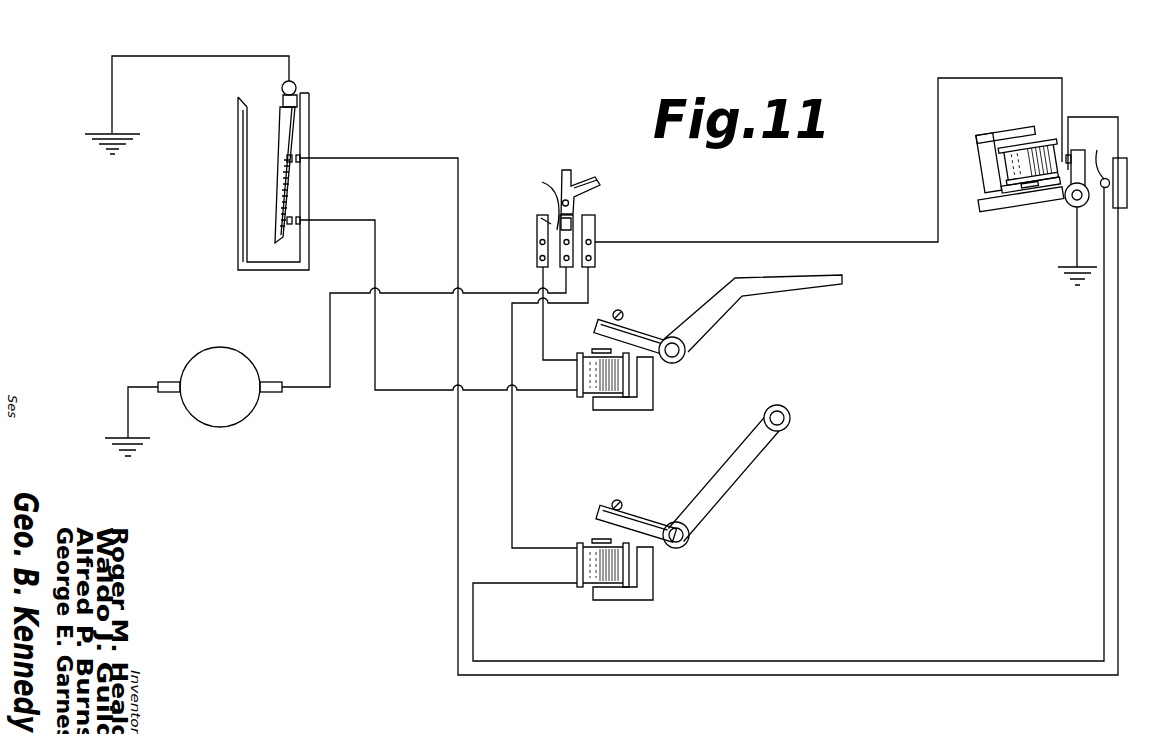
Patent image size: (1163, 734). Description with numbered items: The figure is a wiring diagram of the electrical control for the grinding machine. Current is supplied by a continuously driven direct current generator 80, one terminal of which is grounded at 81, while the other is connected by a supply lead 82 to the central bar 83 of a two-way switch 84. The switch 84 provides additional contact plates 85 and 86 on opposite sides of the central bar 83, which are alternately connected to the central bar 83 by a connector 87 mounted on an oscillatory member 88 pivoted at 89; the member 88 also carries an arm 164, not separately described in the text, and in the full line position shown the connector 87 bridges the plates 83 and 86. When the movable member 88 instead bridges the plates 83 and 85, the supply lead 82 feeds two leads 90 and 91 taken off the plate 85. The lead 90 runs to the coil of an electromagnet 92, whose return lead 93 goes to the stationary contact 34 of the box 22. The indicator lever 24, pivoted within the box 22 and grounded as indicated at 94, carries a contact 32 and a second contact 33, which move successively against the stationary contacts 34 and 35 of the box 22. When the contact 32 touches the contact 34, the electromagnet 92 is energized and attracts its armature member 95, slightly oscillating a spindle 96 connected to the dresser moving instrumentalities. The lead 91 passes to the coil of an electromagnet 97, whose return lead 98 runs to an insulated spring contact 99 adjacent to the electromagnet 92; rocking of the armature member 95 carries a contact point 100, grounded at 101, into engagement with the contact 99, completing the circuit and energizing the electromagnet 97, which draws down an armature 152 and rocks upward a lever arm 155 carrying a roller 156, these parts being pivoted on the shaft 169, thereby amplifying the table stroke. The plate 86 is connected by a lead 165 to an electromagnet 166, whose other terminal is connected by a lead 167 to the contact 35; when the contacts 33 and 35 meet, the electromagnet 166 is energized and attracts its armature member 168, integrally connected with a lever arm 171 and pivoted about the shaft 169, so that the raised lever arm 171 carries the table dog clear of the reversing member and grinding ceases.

The box 22 is at (246, 232).
The indicator lever 24 is at (281, 128).
The contact 32 is at (293, 157).
The second contact 33 is at (293, 219).
The stationary terminal contact 34 is at (299, 157).
The stationary terminal contact 35 is at (299, 220).
The direct current generator 80 is at (240, 413).
The ground 81 is at (127, 437).
The supply lead 82 is at (330, 323).
The central bar 83 is at (578, 244).
The two-way switch 84 is at (598, 192).
The contact plate 85 is at (598, 253).
The contact plate 86 is at (537, 248).
The connector 87 is at (545, 222).
The oscillatory member 88 is at (545, 196).
The pivot 89 is at (570, 205).
The lead 90 is at (728, 242).
The lead 91 is at (513, 474).
The electromagnet 92 is at (1021, 148).
The return lead 93 is at (458, 482).
The ground 94 is at (113, 133).
The armature member 95 is at (998, 208).
The spindle 96 is at (1070, 206).
The electromagnet 97 is at (626, 576).
The return lead 98 is at (873, 661).
The insulated spring contact 99 is at (1099, 156).
The contact point 100 is at (1085, 150).
The ground 101 is at (1065, 265).
The armature 152 is at (630, 518).
The lever arm 155 is at (740, 483).
The roller 156 is at (790, 415).
The armature arm 164 is at (597, 183).
The lead 165 is at (544, 315).
The electromagnet 166 is at (650, 384).
The lead 167 is at (438, 388).
The armature member 168 is at (640, 332).
The pivot shaft 169 is at (687, 353).
The lever arm 171 is at (806, 285).